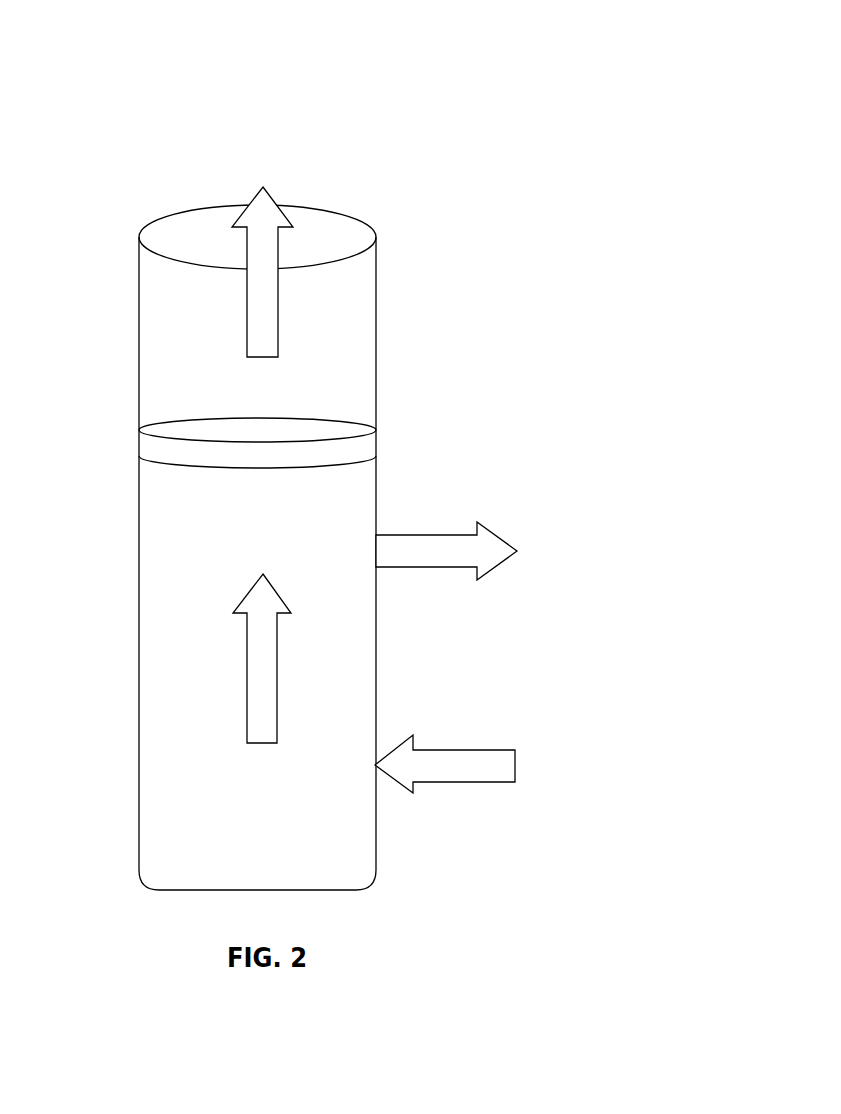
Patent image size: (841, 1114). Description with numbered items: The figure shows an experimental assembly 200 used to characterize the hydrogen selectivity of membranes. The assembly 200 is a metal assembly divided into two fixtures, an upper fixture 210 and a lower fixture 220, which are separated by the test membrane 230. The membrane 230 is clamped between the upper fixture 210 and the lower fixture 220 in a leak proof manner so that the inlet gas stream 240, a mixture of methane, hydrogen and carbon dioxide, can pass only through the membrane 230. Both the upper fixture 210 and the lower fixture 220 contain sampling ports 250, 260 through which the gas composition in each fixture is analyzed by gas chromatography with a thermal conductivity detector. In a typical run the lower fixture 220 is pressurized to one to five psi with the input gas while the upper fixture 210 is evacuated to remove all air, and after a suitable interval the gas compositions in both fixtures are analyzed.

The assembly 200 is at (468, 55).
The upper fixture 210 is at (122, 235).
The lower fixture 220 is at (121, 457).
The test membrane 230 is at (363, 448).
The inlet gas stream 240 is at (448, 782).
The sampling port 250 is at (432, 567).
The sampling port 260 is at (280, 258).